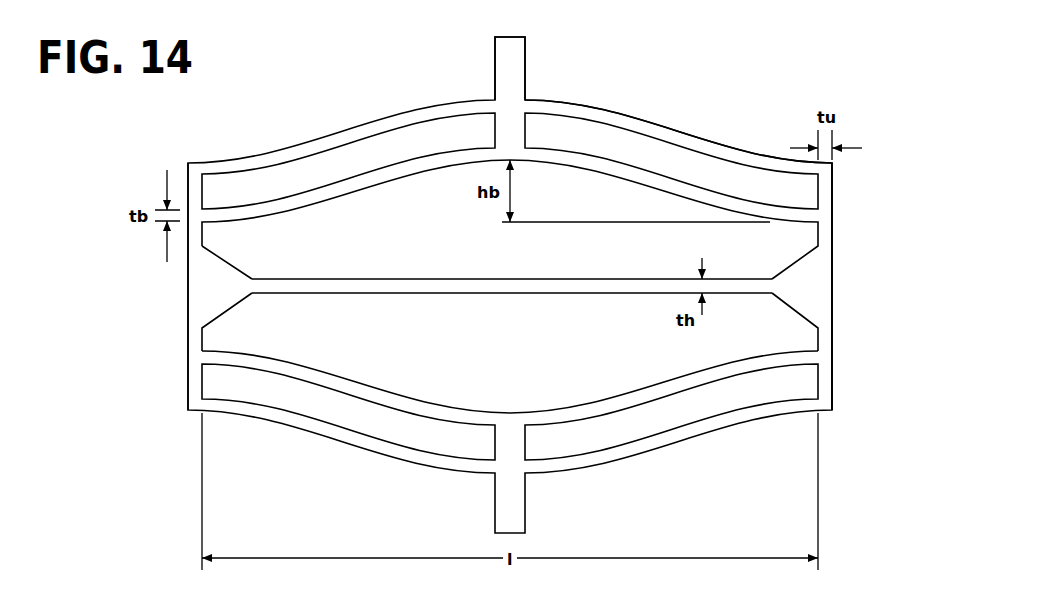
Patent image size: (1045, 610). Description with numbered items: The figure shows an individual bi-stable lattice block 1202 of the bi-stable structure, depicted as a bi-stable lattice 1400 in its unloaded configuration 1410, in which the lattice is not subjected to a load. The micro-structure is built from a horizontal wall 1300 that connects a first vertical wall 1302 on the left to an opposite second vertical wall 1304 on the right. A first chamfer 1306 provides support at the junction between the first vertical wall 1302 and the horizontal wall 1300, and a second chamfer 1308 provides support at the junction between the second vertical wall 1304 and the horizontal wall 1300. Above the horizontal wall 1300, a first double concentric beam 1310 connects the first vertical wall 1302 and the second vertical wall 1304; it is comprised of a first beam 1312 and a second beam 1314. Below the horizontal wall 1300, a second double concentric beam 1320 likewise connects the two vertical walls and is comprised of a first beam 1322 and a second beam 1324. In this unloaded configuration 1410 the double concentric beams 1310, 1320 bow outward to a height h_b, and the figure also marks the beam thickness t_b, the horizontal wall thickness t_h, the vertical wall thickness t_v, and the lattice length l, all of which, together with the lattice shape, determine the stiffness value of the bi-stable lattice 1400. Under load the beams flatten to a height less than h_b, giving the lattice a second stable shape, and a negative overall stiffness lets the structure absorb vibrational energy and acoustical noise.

The bi-stable lattice 1400 is at (430, 52).
The unloaded configuration 1410 is at (590, 75).
The bi-stable lattice block 1202 is at (838, 82).
The first double concentric beam 1310 is at (313, 130).
The first beam 1312 is at (640, 128).
The second beam 1314 is at (347, 200).
The horizontal wall 1300 is at (575, 296).
The first chamfer 1306 is at (227, 311).
The second chamfer 1308 is at (793, 315).
The second beam 1324 is at (367, 388).
The second double concentric beam 1320 is at (323, 443).
The first beam 1322 is at (610, 457).
The first vertical wall 1302 is at (185, 382).
The second vertical wall 1304 is at (833, 224).